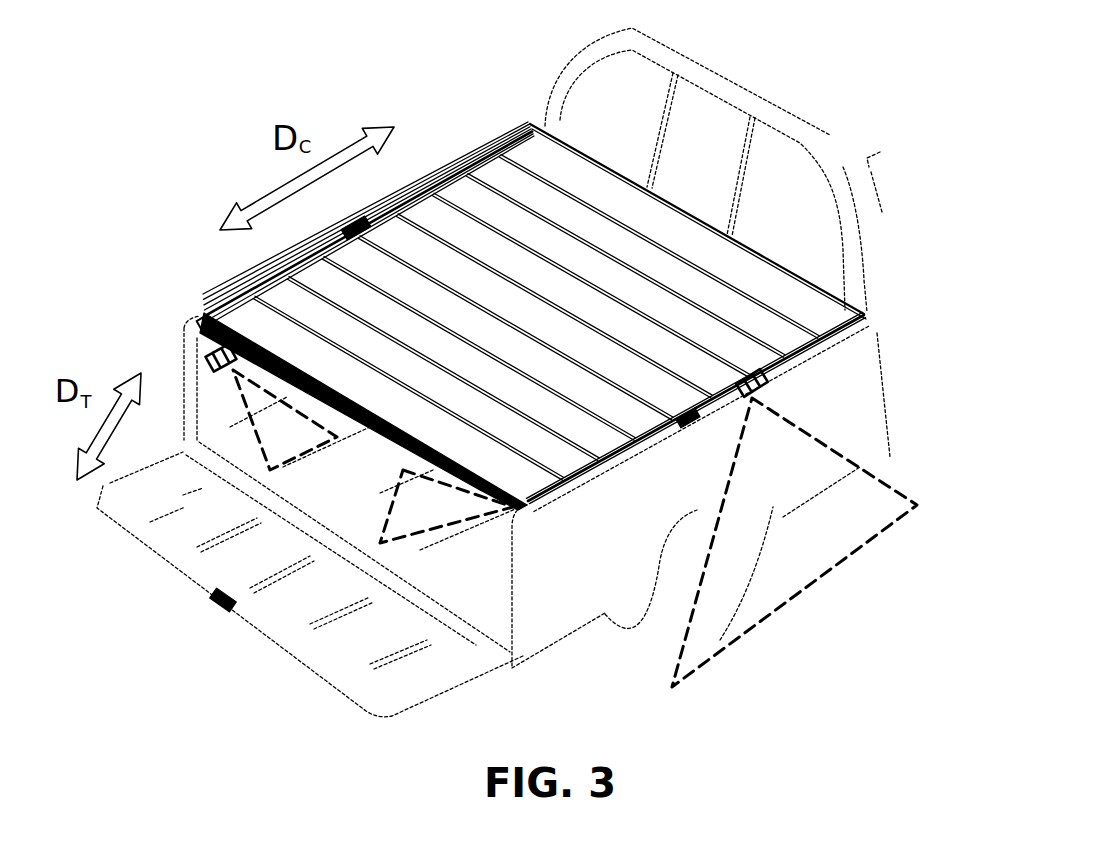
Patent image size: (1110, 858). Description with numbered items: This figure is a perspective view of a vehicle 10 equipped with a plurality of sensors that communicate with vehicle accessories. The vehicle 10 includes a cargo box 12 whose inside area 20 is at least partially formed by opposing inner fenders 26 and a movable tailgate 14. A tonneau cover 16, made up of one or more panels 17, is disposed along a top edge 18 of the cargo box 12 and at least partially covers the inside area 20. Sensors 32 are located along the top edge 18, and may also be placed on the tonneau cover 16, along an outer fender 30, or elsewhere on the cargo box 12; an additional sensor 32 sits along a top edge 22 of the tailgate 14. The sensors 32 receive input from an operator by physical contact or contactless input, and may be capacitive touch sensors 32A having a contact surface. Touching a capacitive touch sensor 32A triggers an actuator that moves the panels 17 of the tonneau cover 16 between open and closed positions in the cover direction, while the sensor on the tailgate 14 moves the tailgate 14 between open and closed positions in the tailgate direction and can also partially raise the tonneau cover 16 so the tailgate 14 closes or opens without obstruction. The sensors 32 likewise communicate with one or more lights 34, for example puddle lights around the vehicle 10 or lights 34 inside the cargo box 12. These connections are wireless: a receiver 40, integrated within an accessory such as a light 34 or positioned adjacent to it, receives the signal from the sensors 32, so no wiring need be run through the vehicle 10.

The vehicle 10 is at (806, 84).
The cargo box 12 is at (552, 376).
The tailgate 14 is at (417, 682).
The tonneau cover 16 is at (535, 155).
The panels 17 is at (498, 173).
The top edge 18 is at (558, 491).
The inside area 20 is at (428, 578).
The top edge 22 is at (290, 663).
The inner fenders 26 is at (218, 417).
The outer fender 30 is at (553, 607).
The sensor 32 is at (680, 421).
The capacitive touch sensor 32A is at (367, 227).
The light 34 is at (208, 352).
The receiver 40 is at (210, 325).